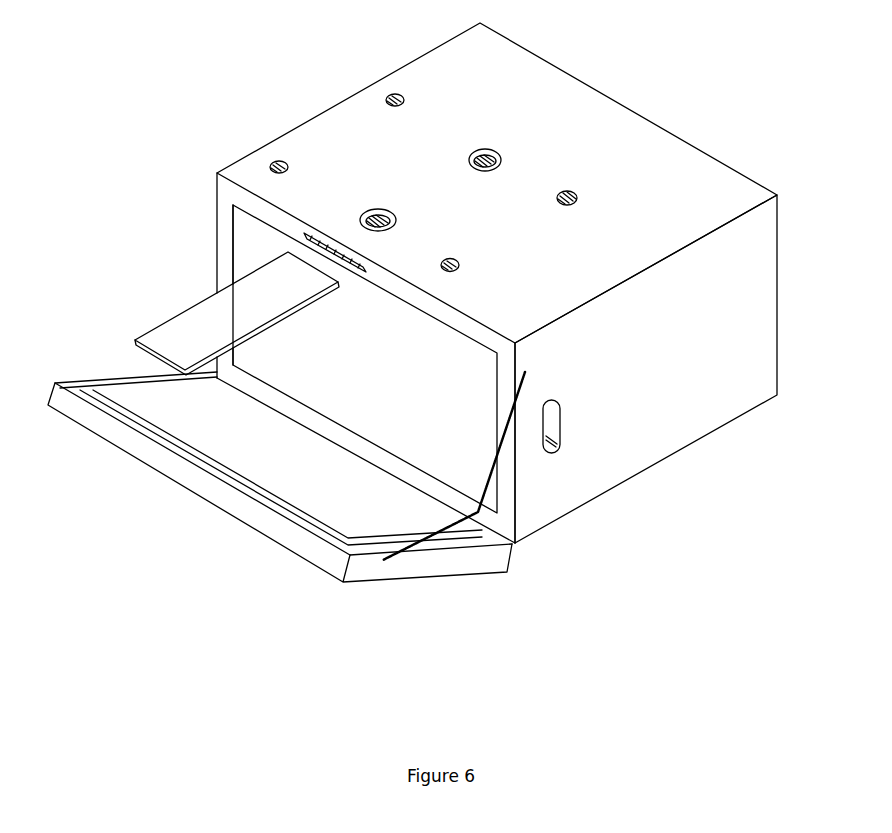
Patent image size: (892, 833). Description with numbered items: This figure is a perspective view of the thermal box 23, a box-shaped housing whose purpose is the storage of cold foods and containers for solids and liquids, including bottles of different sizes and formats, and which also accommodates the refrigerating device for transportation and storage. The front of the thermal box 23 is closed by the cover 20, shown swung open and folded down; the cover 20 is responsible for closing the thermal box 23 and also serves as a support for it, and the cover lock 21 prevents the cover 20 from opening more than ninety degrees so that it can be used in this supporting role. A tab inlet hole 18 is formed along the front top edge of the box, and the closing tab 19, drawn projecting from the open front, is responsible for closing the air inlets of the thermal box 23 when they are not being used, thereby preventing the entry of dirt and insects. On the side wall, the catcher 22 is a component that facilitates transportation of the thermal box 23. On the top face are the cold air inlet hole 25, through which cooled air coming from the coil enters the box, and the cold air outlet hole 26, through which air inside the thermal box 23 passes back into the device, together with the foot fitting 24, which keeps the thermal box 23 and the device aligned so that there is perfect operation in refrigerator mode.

The tab inlet hole 18 is at (318, 232).
The closing tab 19 is at (210, 312).
The cover 20 is at (197, 478).
The cover lock 21 is at (500, 502).
The catcher 22 is at (558, 455).
The thermal box 23 is at (658, 362).
The foot fitting 24 is at (578, 203).
The cold air inlet hole 25 is at (497, 153).
The cold air outlet hole 26 is at (373, 206).